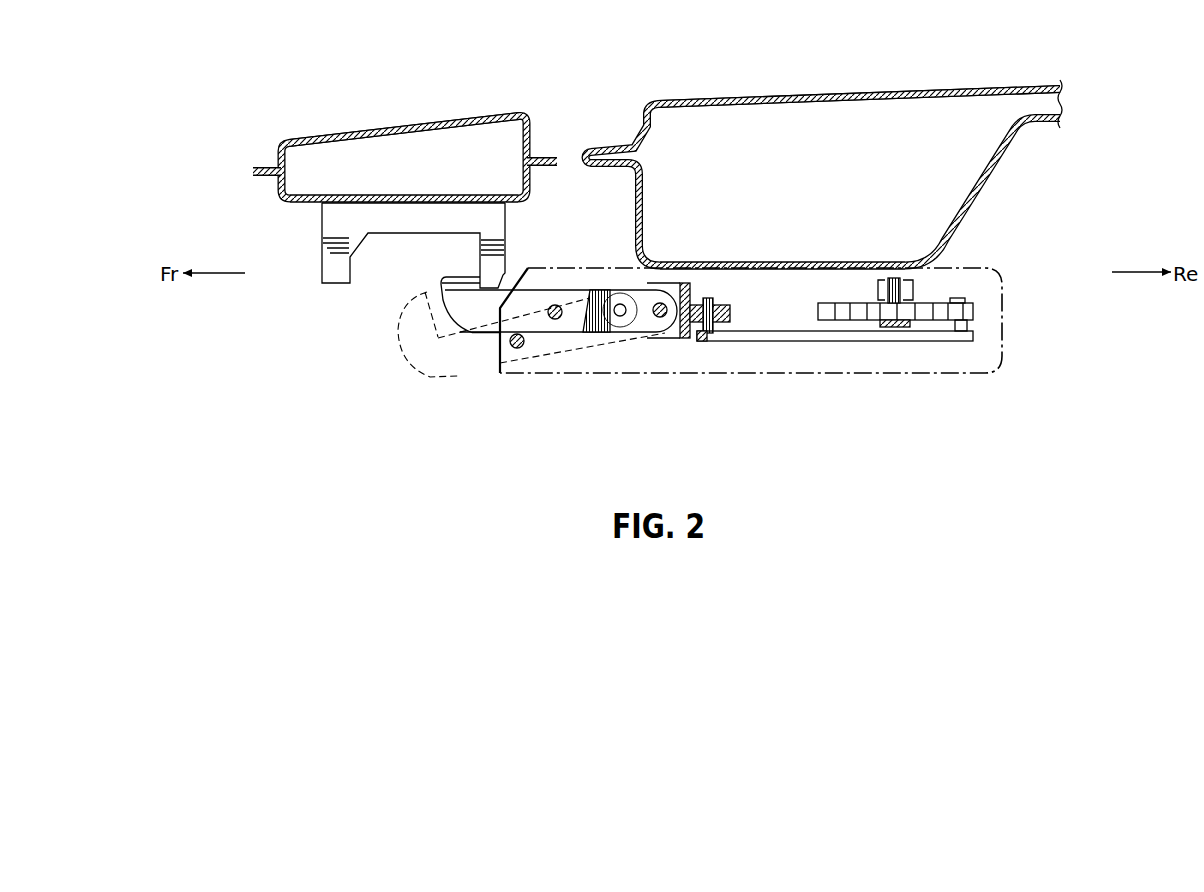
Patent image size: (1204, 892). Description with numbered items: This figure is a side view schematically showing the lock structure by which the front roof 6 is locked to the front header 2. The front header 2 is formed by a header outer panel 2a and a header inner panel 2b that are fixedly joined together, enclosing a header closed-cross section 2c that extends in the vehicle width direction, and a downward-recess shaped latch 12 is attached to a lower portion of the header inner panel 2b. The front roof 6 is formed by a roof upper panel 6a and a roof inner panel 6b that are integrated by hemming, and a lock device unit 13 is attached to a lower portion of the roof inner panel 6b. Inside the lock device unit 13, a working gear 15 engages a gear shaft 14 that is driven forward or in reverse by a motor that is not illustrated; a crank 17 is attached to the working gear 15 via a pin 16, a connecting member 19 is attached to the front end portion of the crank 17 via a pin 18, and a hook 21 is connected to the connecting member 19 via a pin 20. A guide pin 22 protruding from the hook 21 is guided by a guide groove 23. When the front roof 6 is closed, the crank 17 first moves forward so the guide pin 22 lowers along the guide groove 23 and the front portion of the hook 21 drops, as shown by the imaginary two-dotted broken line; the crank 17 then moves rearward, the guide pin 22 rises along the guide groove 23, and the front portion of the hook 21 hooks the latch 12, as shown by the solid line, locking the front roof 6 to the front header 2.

The front header 2 is at (439, 117).
The header outer panel 2a is at (350, 138).
The header inner panel 2b is at (472, 196).
The header closed-cross section 2c is at (403, 172).
The front roof 6 is at (802, 90).
The roof upper panel 6a is at (885, 88).
The roof inner panel 6b is at (755, 260).
The latch 12 is at (319, 224).
The lock device unit 13 is at (875, 374).
The gear shaft 14 is at (893, 277).
The working gear 15 is at (975, 310).
The pin 16 is at (958, 300).
The crank 17 is at (795, 343).
The pin 18 is at (705, 299).
The connecting member 19 is at (675, 281).
The pin 20 is at (660, 322).
The hook 21 is at (442, 281).
The guide pin 22 is at (565, 302).
The guide groove 23 is at (533, 338).